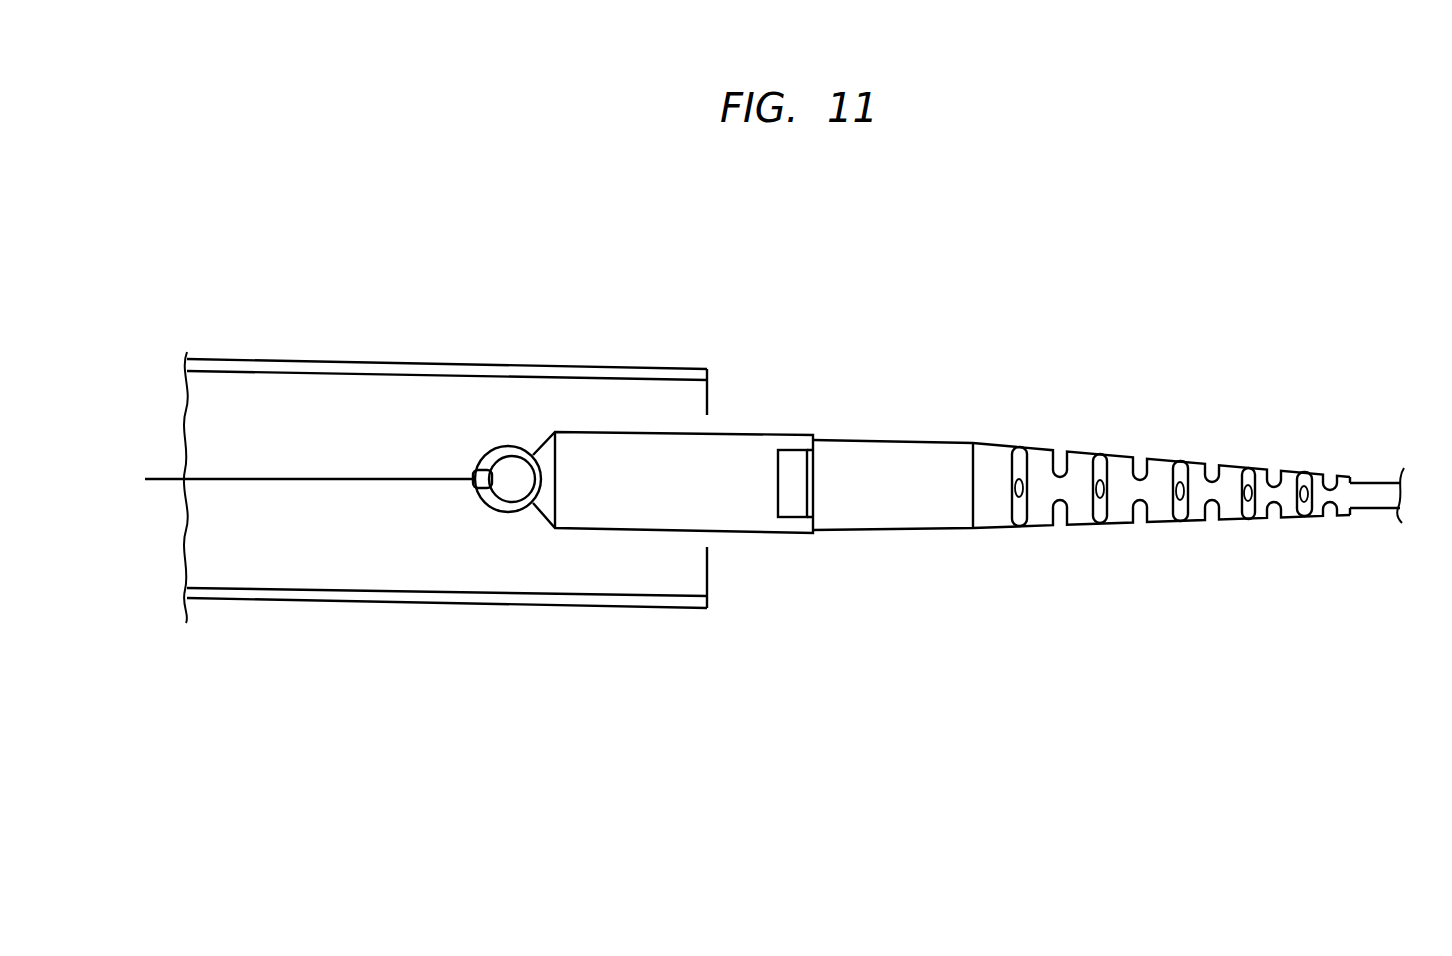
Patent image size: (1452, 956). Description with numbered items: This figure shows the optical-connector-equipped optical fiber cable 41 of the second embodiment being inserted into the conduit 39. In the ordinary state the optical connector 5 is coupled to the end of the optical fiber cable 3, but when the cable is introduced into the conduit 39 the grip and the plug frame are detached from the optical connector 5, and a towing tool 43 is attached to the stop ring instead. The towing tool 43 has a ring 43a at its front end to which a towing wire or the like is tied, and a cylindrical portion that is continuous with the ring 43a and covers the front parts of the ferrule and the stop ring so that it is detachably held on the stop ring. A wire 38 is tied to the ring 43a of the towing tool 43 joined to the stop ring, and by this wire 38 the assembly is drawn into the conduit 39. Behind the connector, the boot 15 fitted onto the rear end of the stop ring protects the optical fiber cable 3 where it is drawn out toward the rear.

The optical fiber cable 3 is at (1374, 488).
The optical connector 5 is at (927, 517).
The boot 15 is at (1160, 510).
The wire 38 is at (335, 477).
The conduit 39 is at (640, 368).
The optical-connector-equipped optical fiber cable 41 is at (975, 440).
The towing tool 43 is at (755, 537).
The ring 43a is at (505, 453).